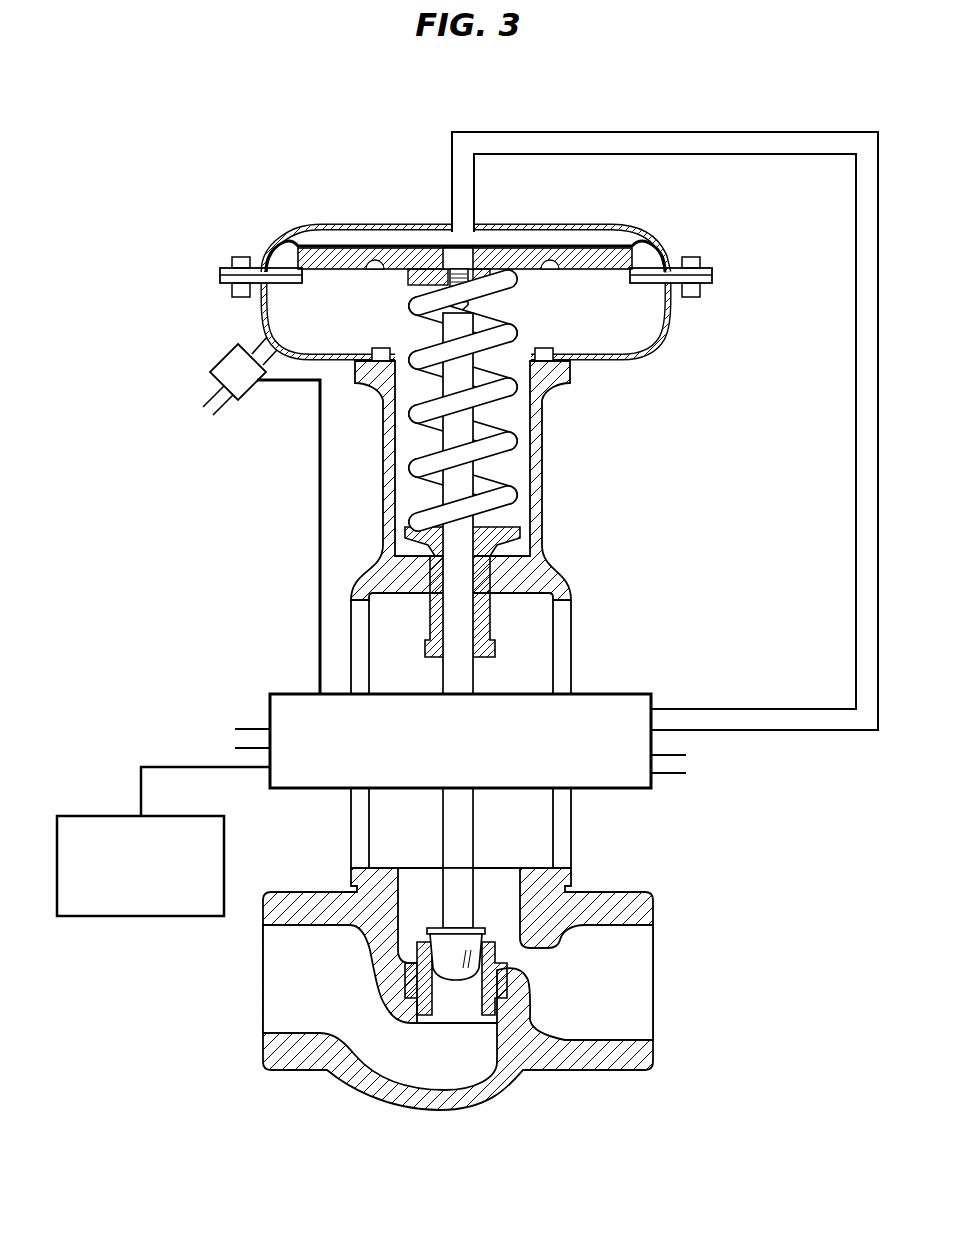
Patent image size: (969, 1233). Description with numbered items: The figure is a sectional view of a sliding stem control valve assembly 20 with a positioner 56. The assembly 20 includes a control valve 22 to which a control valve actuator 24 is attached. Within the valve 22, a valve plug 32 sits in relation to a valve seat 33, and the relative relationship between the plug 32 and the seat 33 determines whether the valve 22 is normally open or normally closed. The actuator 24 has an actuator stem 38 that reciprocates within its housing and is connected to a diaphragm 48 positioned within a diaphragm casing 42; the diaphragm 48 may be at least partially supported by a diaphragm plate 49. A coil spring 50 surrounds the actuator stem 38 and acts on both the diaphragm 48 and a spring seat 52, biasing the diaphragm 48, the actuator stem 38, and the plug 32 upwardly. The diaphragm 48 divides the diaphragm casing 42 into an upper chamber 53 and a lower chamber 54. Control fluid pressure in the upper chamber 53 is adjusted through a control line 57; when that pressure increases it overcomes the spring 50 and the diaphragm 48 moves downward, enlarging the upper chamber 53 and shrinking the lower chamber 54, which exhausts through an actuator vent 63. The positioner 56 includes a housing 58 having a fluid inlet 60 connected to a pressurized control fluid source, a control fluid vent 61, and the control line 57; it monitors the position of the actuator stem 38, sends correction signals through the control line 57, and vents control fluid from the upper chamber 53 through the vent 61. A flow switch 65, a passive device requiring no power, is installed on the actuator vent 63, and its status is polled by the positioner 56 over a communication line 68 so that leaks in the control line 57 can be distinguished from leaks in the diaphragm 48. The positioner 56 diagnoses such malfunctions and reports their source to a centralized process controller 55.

The control valve assembly 20 is at (96, 489).
The control valve 22 is at (710, 895).
The control valve actuator 24 is at (192, 200).
The valve plug 32 is at (458, 982).
The valve seat 33 is at (497, 946).
The actuator stem 38 is at (470, 432).
The diaphragm casing 42 is at (561, 222).
The diaphragm 48 is at (290, 272).
The diaphragm plate 49 is at (506, 266).
The coil spring 50 is at (521, 603).
The spring seat 52 is at (500, 540).
The upper chamber 53 is at (646, 258).
The lower chamber 54 is at (637, 334).
The centralized process controller 55 is at (103, 812).
The positioner 56 is at (666, 671).
The control line 57 is at (738, 131).
The housing 58 is at (600, 693).
The fluid inlet 60 is at (665, 777).
The control fluid vent 61 is at (245, 727).
The actuator vent 63 is at (257, 351).
The flow switch 65 is at (249, 387).
The line 68 is at (318, 470).